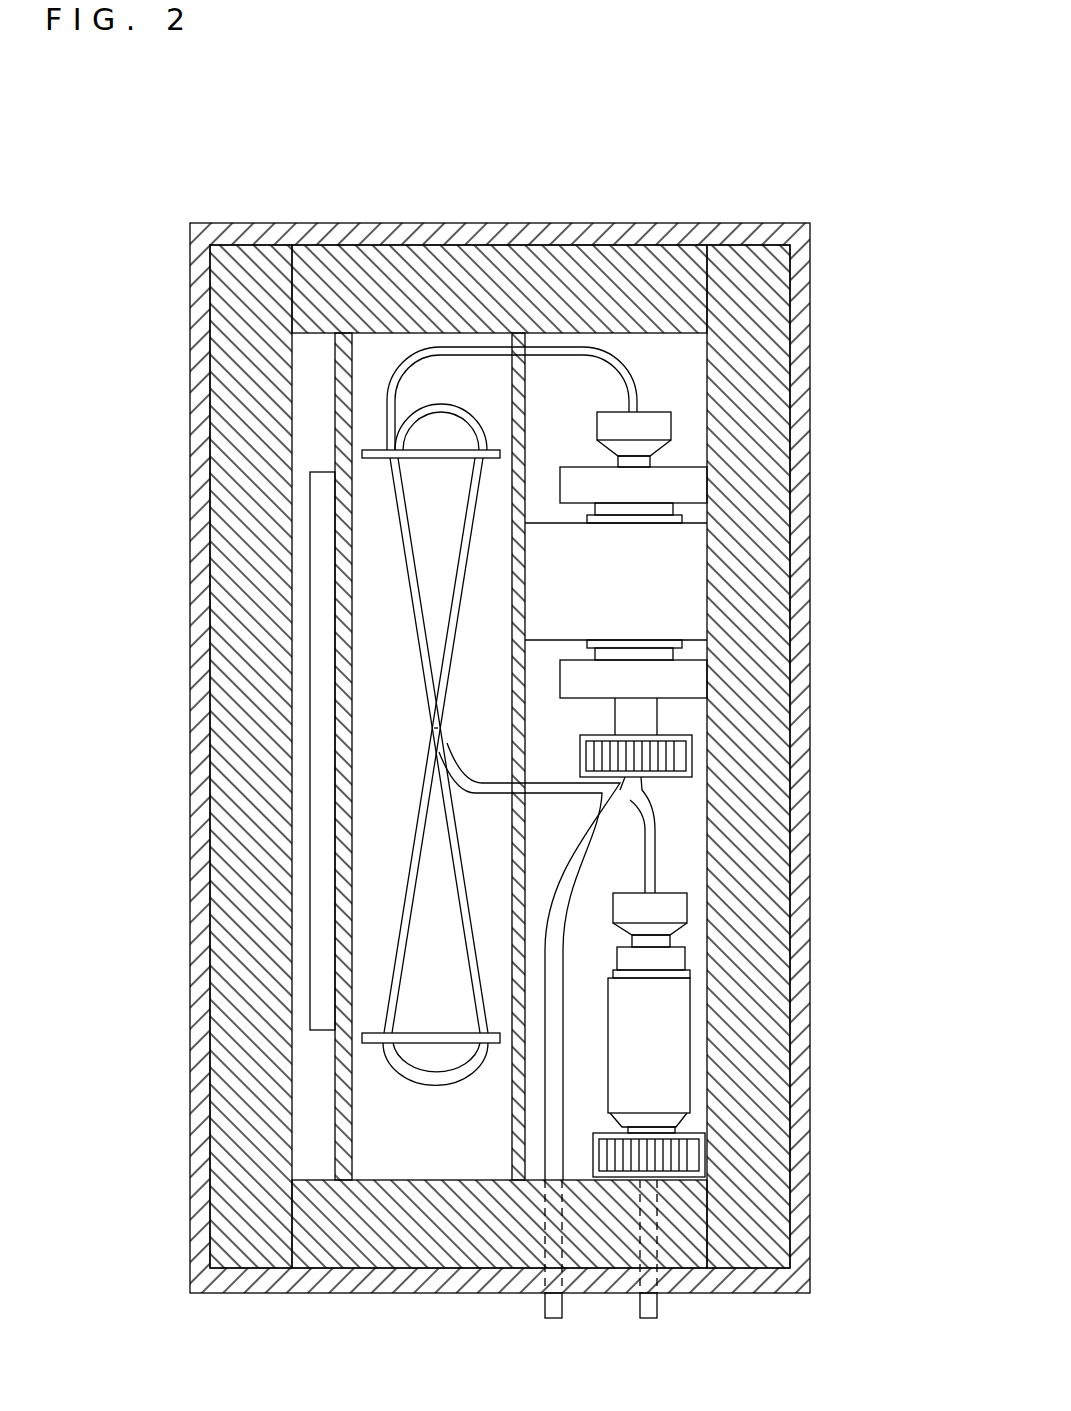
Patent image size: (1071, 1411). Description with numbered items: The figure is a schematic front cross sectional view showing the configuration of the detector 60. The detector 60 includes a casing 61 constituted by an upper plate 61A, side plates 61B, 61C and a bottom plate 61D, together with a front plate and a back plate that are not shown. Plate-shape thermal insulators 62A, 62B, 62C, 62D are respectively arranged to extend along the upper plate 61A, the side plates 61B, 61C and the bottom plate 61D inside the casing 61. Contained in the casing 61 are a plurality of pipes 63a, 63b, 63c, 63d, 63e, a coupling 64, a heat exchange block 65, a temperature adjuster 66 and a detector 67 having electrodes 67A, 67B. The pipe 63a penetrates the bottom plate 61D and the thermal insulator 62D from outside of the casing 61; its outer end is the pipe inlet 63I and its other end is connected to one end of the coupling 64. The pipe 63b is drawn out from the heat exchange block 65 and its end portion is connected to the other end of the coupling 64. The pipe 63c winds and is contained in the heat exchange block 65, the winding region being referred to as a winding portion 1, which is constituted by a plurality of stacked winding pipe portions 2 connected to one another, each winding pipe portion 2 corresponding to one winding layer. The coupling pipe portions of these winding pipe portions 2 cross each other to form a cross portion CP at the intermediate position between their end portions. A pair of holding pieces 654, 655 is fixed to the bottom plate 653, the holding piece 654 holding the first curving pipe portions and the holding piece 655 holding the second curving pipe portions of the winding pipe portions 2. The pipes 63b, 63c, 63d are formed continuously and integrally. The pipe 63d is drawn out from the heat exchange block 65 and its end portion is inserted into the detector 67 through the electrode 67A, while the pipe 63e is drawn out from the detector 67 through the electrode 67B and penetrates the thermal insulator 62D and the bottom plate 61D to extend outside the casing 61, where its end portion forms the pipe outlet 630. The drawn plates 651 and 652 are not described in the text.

The detector 60 is at (895, 157).
The casing 61 is at (810, 222).
The upper plate 61A is at (418, 235).
The side plate 61B is at (805, 413).
The side plate 61C is at (198, 635).
The bottom plate 61D is at (382, 1293).
The thermal insulator 62A is at (393, 275).
The thermal insulator 62B is at (730, 420).
The thermal insulator 62C is at (267, 640).
The thermal insulator 62D is at (357, 1253).
The pipe 63a is at (657, 1213).
The pipe 63b is at (658, 887).
The pipe 63c is at (490, 783).
The pipe 63d is at (588, 345).
The pipe 63e is at (623, 832).
The pipe outlet 630 is at (553, 1323).
The pipe inlet 63I is at (648, 1323).
The coupling 64 is at (692, 1013).
The heat exchange block 65 is at (242, 673).
The temperature adjuster 66 is at (317, 513).
The detector 67 is at (655, 591).
The electrode 67A is at (697, 483).
The electrode 67B is at (698, 680).
The cooling plate 651 is at (342, 335).
The partition plate 652 is at (520, 345).
The bottom plate 653 is at (400, 634).
The holding piece 654 is at (372, 463).
The holding piece 655 is at (372, 1032).
The cross portion CP is at (435, 738).
The winding portion 1 is at (434, 772).
The winding pipe portion 2 is at (442, 1082).